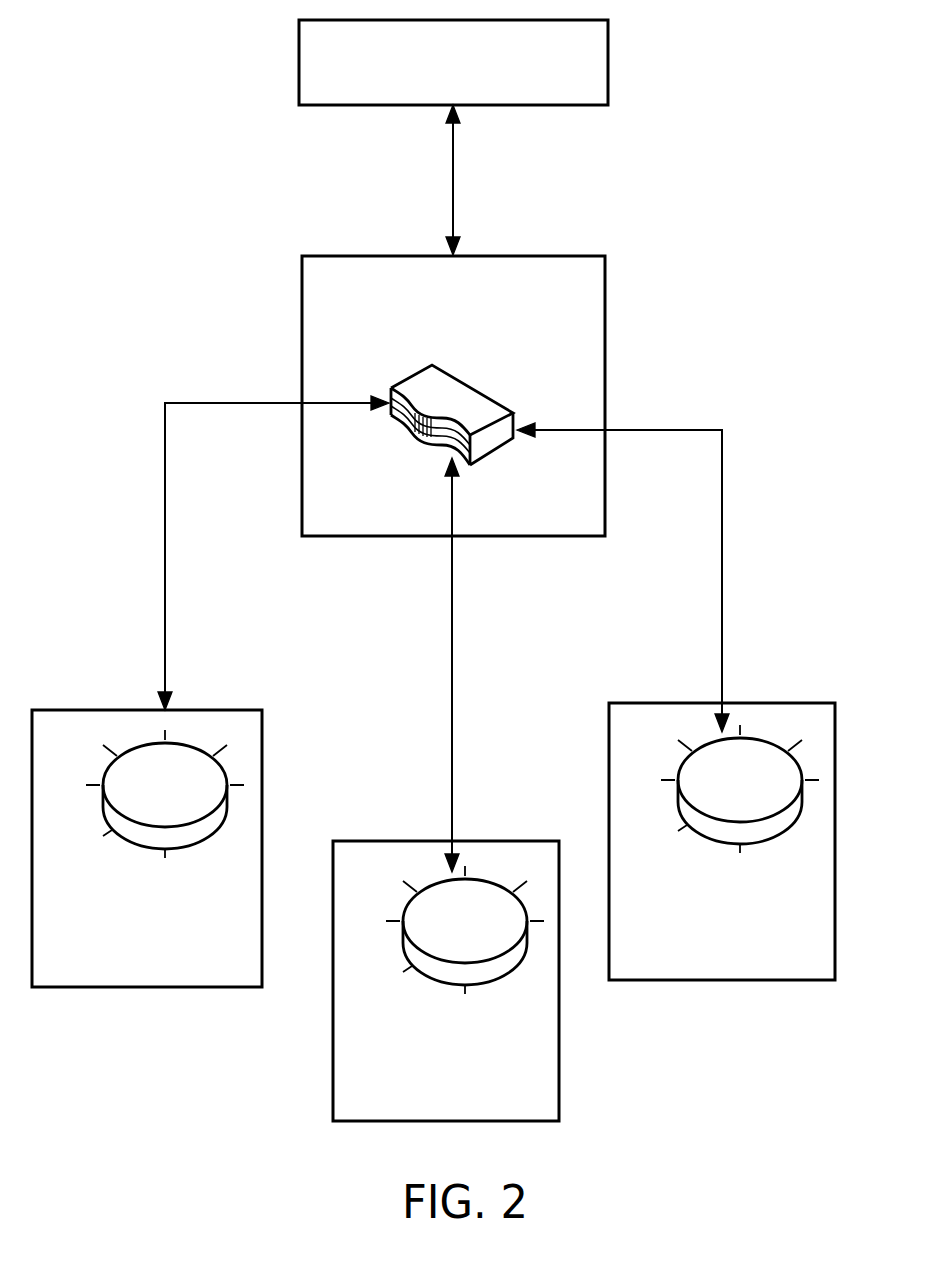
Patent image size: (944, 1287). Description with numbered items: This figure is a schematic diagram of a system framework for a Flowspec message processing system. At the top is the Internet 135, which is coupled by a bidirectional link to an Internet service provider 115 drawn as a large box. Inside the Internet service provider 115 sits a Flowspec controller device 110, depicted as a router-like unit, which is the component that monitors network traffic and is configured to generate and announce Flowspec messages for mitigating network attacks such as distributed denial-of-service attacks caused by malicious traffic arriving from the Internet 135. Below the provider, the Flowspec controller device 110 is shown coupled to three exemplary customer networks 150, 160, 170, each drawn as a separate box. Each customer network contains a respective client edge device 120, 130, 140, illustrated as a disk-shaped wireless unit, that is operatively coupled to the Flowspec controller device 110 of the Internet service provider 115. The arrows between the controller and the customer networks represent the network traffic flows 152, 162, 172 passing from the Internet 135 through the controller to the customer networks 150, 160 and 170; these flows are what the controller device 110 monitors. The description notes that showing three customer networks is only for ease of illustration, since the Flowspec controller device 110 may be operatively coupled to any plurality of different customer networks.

The Internet 135 is at (299, 62).
The Internet service provider 115 is at (302, 282).
The Flowspec controller device 110 is at (463, 383).
The network traffic flow 172 is at (165, 604).
The customer network 170 is at (227, 710).
The client edge device 140 is at (133, 843).
The network traffic flow 152 is at (452, 666).
The customer network 150 is at (493, 841).
The client edge device 120 is at (483, 985).
The network traffic flow 162 is at (722, 540).
The customer network 160 is at (808, 703).
The client edge device 130 is at (763, 845).